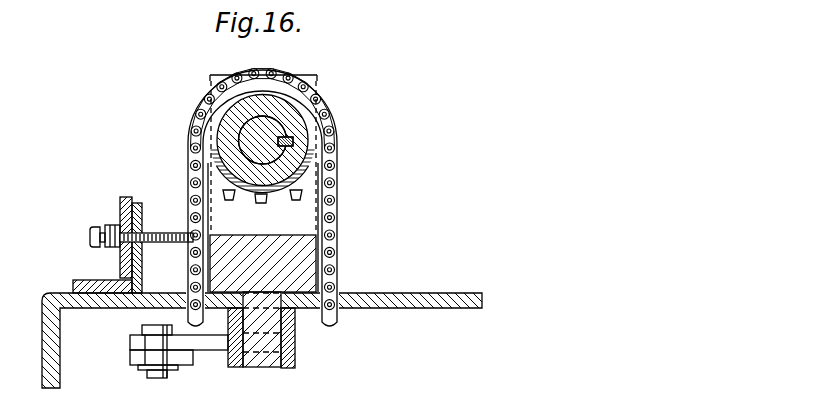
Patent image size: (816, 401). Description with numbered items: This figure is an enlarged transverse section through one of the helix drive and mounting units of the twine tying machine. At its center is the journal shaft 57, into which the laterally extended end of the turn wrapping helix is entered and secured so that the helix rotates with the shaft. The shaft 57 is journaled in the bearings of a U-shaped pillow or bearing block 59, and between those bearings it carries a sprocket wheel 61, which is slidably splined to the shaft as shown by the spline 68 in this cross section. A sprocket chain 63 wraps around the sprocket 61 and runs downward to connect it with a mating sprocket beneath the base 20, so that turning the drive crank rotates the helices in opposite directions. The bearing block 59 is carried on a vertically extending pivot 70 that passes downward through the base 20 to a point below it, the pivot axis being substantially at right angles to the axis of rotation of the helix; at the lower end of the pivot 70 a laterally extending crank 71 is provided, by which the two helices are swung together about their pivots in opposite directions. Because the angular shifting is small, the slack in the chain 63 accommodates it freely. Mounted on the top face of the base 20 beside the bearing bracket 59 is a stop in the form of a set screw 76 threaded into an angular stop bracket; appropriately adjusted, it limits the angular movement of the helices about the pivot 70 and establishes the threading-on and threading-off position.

The base 20 is at (421, 293).
The journal shaft 57 is at (240, 134).
The U-shaped pillow 59 is at (192, 203).
The sprocket wheel 61 is at (306, 116).
The sprocket chain 63 is at (335, 232).
The spline 68 is at (295, 141).
The pivot 70 is at (280, 357).
The crank 71 is at (130, 337).
The set screw 76 is at (93, 226).